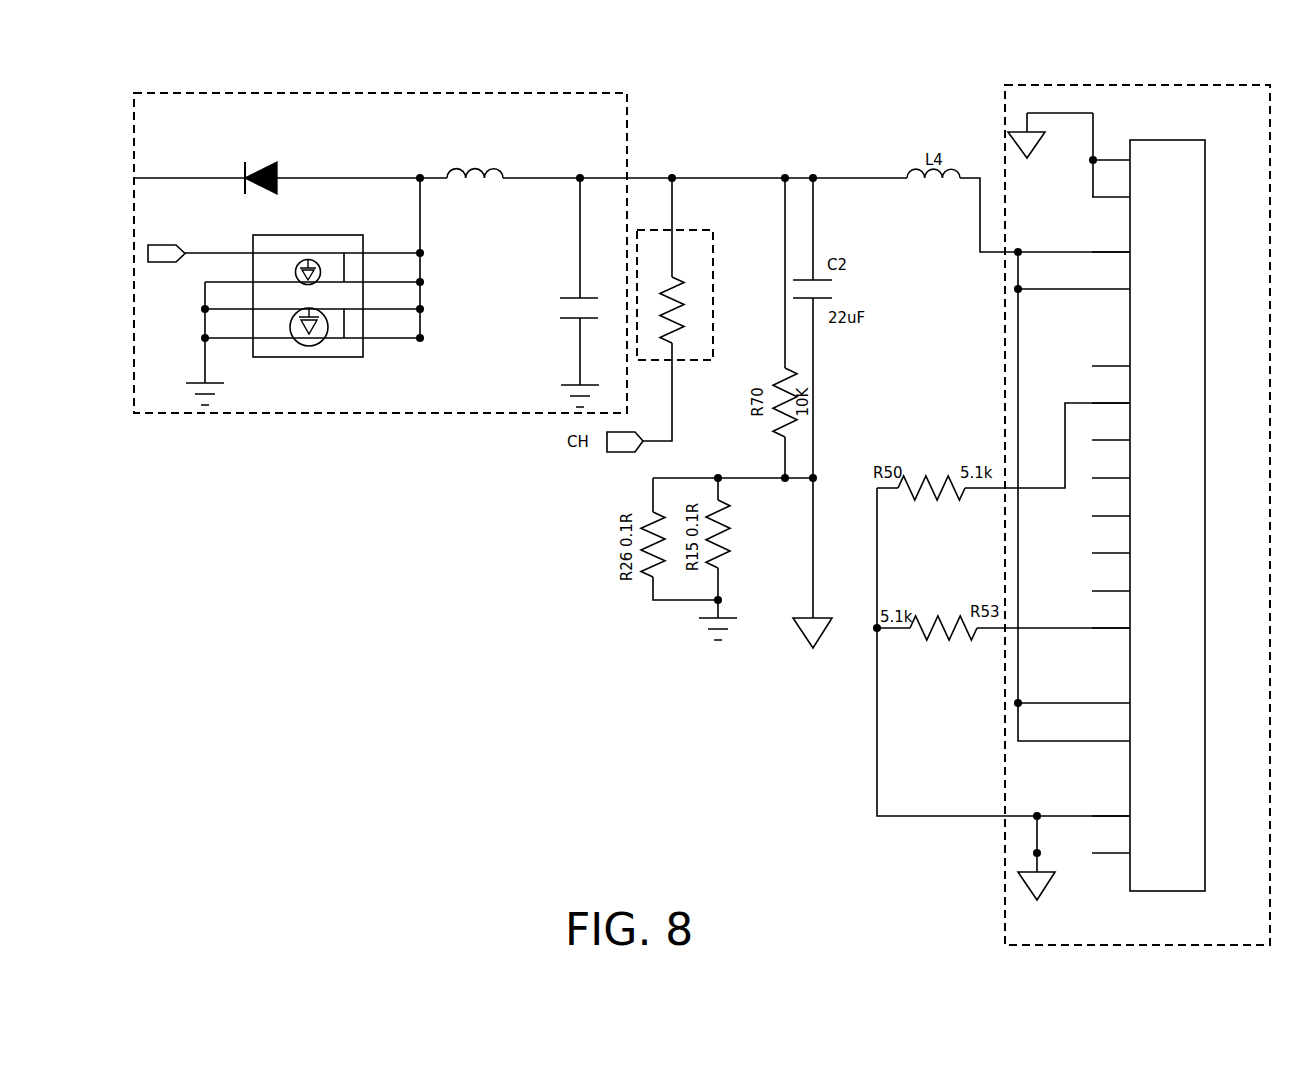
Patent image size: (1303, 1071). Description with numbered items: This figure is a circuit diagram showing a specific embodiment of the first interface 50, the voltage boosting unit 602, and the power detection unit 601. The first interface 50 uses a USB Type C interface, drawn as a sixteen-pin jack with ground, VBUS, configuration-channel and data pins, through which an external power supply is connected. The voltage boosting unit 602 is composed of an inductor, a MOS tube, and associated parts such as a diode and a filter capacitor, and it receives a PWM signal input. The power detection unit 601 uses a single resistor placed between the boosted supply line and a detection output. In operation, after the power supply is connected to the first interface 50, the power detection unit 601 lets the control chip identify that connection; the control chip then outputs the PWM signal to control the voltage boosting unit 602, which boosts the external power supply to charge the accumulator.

The voltage boosting unit 602 is at (473, 90).
The power detection unit 601 is at (693, 227).
The first interface 50 is at (1137, 83).